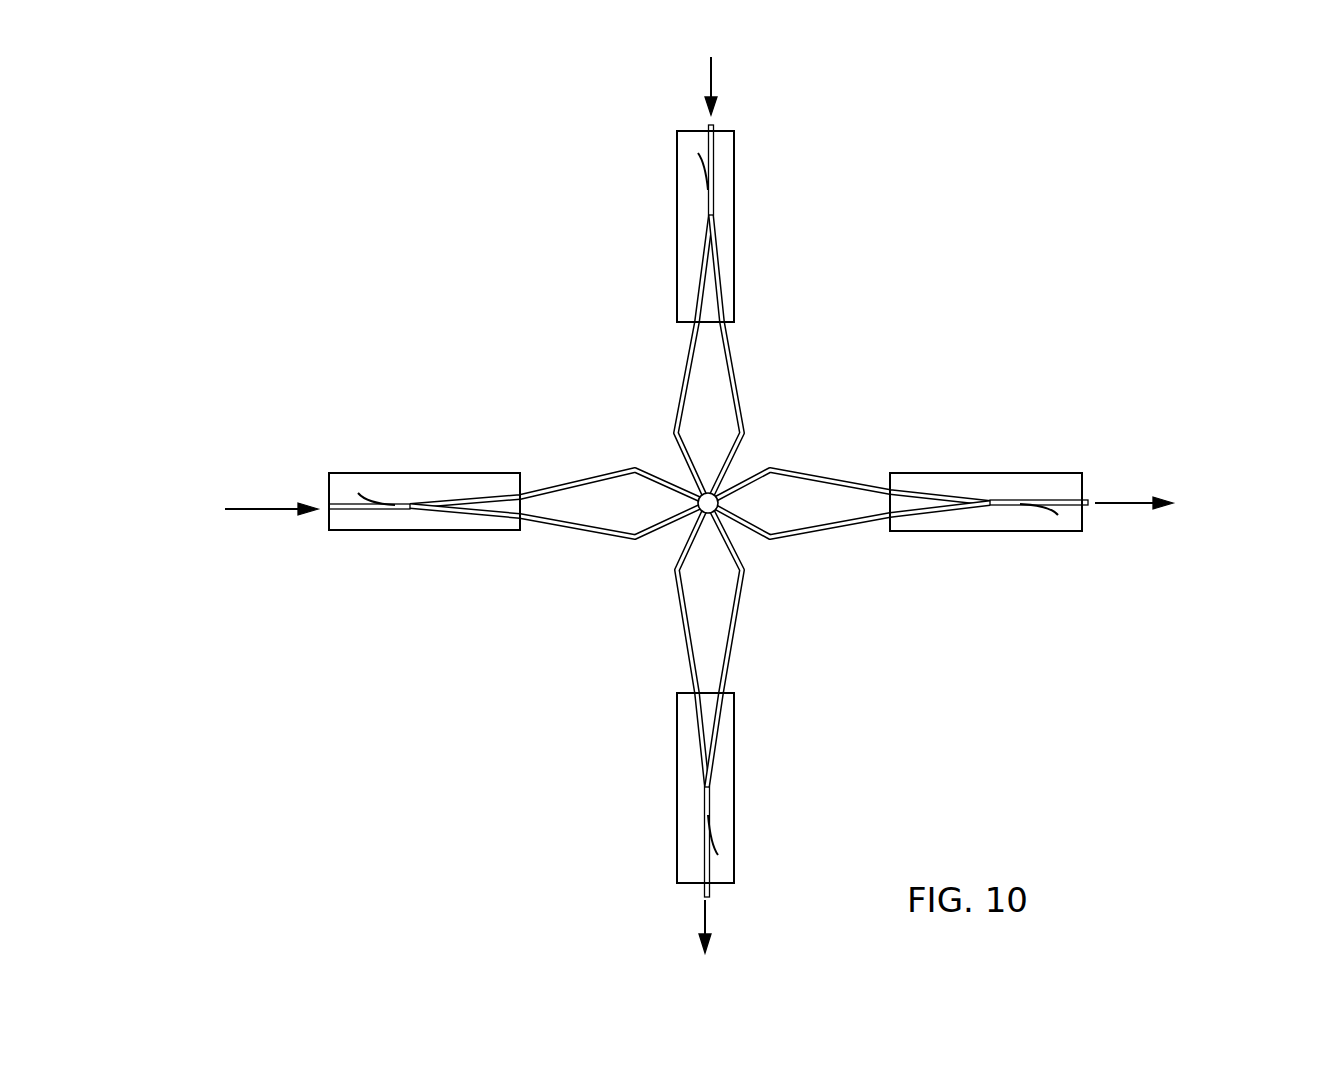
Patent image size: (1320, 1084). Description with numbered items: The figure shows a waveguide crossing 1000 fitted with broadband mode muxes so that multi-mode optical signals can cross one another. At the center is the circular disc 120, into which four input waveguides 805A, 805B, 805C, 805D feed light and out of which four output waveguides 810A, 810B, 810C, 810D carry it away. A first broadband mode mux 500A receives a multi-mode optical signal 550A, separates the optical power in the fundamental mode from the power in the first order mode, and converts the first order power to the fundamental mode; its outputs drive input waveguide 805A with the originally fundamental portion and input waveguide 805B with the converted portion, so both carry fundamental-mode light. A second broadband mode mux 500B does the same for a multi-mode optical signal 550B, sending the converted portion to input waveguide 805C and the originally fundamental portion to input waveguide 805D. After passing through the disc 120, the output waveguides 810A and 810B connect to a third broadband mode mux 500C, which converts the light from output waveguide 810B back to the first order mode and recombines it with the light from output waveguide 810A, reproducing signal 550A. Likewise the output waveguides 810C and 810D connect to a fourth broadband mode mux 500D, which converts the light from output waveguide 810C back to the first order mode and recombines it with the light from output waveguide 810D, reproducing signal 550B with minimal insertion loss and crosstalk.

The waveguide crossing 1000 is at (1120, 95).
The circular disc 120 is at (699, 504).
The first broadband mode mux 500A is at (734, 247).
The second broadband mode mux 500B is at (425, 473).
The third broadband mode mux 500C is at (734, 760).
The fourth broadband mode mux 500D is at (1015, 473).
The multi-mode optical signal 550A is at (711, 78).
The multi-mode optical signal 550B is at (255, 507).
The input waveguide 805A is at (742, 443).
The input waveguide 805B is at (676, 437).
The input waveguide 805C is at (665, 475).
The input waveguide 805D is at (632, 540).
The output waveguide 810A is at (673, 572).
The output waveguide 810B is at (743, 572).
The output waveguide 810C is at (783, 542).
The output waveguide 810D is at (770, 470).